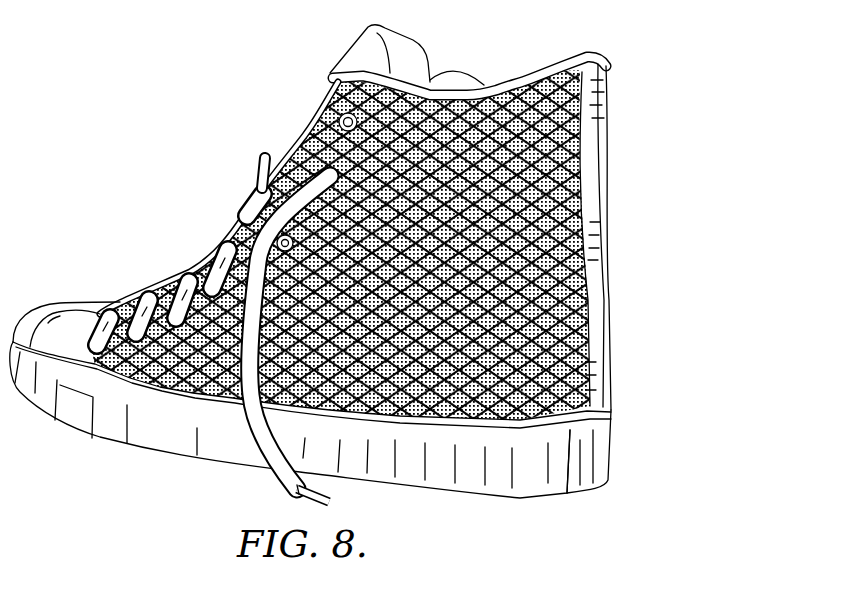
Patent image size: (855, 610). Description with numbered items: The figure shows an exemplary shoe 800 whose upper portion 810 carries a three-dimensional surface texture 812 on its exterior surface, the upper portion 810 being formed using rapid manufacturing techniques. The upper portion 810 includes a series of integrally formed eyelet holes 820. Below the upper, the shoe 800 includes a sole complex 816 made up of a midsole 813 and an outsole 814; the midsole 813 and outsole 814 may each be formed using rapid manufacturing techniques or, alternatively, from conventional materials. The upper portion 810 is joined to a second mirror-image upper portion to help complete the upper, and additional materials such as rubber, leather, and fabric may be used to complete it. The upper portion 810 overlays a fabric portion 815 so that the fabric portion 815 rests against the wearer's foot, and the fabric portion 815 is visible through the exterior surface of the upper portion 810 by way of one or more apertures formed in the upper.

The shoe 800 is at (364, 282).
The upper portion 810 is at (573, 140).
The 3-D surface texture 812 is at (573, 293).
The midsole 813 is at (573, 415).
The outsole 814 is at (520, 498).
The fabric portion 815 is at (573, 230).
The sole complex 816 is at (633, 405).
The eyelet holes 820 is at (340, 112).